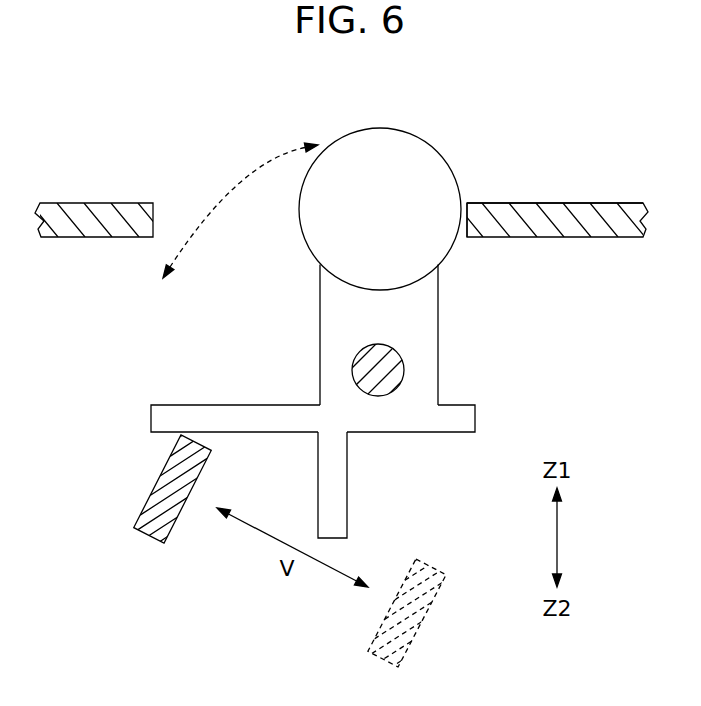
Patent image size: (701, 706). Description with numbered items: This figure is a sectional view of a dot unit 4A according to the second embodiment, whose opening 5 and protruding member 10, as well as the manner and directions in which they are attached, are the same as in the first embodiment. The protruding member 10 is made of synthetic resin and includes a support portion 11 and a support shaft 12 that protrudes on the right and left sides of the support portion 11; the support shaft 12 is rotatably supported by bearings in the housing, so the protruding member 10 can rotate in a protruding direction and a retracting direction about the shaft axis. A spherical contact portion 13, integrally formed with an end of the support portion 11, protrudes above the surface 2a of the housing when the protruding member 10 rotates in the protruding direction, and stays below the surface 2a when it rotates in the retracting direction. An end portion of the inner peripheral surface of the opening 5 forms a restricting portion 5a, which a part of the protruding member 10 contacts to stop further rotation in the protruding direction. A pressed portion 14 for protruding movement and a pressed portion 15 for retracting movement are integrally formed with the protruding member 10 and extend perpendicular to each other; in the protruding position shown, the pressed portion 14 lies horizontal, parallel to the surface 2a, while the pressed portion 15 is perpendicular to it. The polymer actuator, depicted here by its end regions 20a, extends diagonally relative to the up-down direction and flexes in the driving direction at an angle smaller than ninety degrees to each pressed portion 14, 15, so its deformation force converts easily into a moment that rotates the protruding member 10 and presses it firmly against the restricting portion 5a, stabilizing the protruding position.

The dot unit 4A is at (270, 82).
The opening 5 is at (126, 215).
The restricting portion 5a is at (463, 212).
The surface of the housing 2a is at (548, 202).
The protruding member 10 is at (467, 328).
The support portion 11 is at (340, 318).
The support shaft 12 is at (400, 366).
The contact portion 13 is at (383, 145).
The pressed portion for protruding movement 14 is at (162, 418).
The pressed portion for retracting movement 15 is at (333, 488).
The pressing member 20a is at (165, 495).